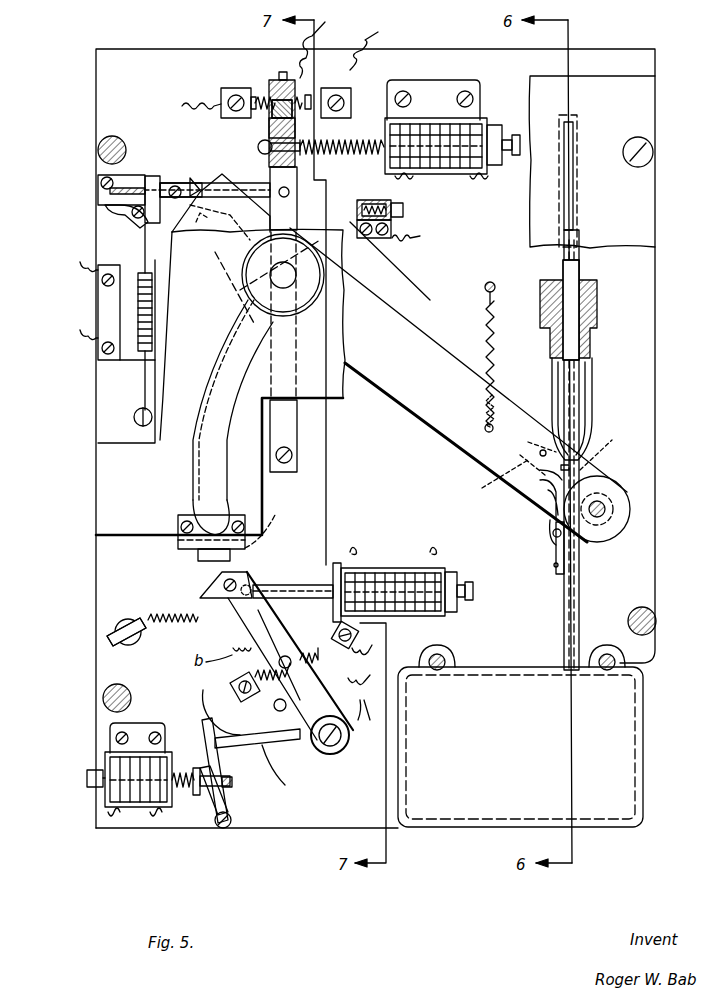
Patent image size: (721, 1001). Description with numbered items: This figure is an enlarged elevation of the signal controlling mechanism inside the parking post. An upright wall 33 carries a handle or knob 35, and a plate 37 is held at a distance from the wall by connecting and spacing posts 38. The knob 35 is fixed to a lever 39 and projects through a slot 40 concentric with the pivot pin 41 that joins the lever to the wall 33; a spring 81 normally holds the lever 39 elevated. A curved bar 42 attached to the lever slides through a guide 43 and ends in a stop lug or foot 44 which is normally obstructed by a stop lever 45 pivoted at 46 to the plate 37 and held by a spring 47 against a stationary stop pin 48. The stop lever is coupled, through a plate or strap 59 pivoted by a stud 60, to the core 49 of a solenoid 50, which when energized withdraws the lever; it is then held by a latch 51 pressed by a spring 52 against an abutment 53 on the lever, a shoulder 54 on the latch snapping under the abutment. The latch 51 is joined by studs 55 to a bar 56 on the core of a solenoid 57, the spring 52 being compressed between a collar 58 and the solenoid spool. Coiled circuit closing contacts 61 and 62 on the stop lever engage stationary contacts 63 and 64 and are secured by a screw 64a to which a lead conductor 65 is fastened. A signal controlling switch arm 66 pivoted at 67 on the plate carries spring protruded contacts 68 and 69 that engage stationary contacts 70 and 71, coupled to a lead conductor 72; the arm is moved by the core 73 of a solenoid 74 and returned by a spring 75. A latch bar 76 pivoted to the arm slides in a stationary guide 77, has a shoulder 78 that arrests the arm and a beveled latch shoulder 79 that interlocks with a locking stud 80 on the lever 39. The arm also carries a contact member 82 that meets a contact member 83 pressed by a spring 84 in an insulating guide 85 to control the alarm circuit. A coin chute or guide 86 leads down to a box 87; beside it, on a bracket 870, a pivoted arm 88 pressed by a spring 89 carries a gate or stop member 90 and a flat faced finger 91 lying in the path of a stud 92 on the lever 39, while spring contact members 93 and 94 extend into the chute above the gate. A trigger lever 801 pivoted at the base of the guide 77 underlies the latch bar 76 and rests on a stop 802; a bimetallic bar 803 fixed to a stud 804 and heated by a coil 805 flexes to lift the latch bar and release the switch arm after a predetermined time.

The upright wall 33 is at (104, 498).
The handle or knob 35 is at (250, 288).
The plate 37 is at (104, 74).
The connecting and spacing posts 38 is at (98, 147).
The lever 39 is at (418, 414).
The slot 40 is at (220, 381).
The pivot pin 41 is at (604, 503).
The curved bar 42 is at (200, 448).
The guide 43 is at (178, 547).
The stop lug or foot 44 is at (269, 530).
The stop lever 45 is at (248, 618).
The pivot 46 is at (340, 752).
The spring 47 is at (180, 618).
The stationary stop pin 48 is at (268, 742).
The core 49 is at (312, 585).
The solenoid 50 is at (400, 565).
The latch 51 is at (222, 818).
The spring 52 is at (200, 728).
The abutment 53 is at (280, 773).
The shoulder 54 is at (219, 691).
The studs 55 is at (212, 786).
The bar 56 is at (232, 777).
The solenoid 57 is at (125, 812).
The collar 58 is at (176, 800).
The plate or strap 59 is at (218, 580).
The stud 60 is at (248, 575).
The circuit closing contact 61 is at (279, 655).
The circuit closing contact 62 is at (297, 664).
The stationary contact 63 is at (258, 697).
The stationary contact 64 is at (360, 665).
The screw 64a is at (340, 625).
The lead conductor 65 is at (361, 713).
The signal controlling switch arm 66 is at (269, 132).
The pivot 67 is at (296, 458).
The spring protruded contact 68 is at (269, 86).
The spring protruded contact 69 is at (344, 88).
The stationary contact 70 is at (238, 88).
The stationary contact 71 is at (376, 45).
The lead conductor 72 is at (327, 45).
The core 73 is at (372, 152).
The solenoid 74 is at (462, 176).
The spring 75 is at (322, 155).
The latch bar 76 is at (268, 180).
The stationary guide 77 is at (150, 176).
The shoulder 78 is at (172, 183).
The latch shoulder 79 is at (200, 180).
The locking stud 80 is at (221, 213).
The spring 81 is at (480, 318).
The contact member 82 is at (380, 250).
The contact member 83 is at (404, 262).
The spring 84 is at (403, 208).
The guide 85 is at (422, 236).
The coin chute or guide 86 is at (580, 590).
The box 87 is at (620, 730).
The pivoted arm 88 is at (545, 508).
The spring 89 is at (553, 532).
The block 870 is at (554, 560).
The gate or stop member 90 is at (603, 447).
The flat faced finger 91 is at (516, 478).
The stud 92 is at (532, 448).
The spring contact member 93 is at (548, 374).
The spring contact member 94 is at (590, 395).
The trigger lever 801 is at (105, 200).
The stop 802 is at (106, 212).
The bimetallic bar 803 is at (160, 270).
The stud 804 is at (134, 416).
The coil 805 is at (155, 342).